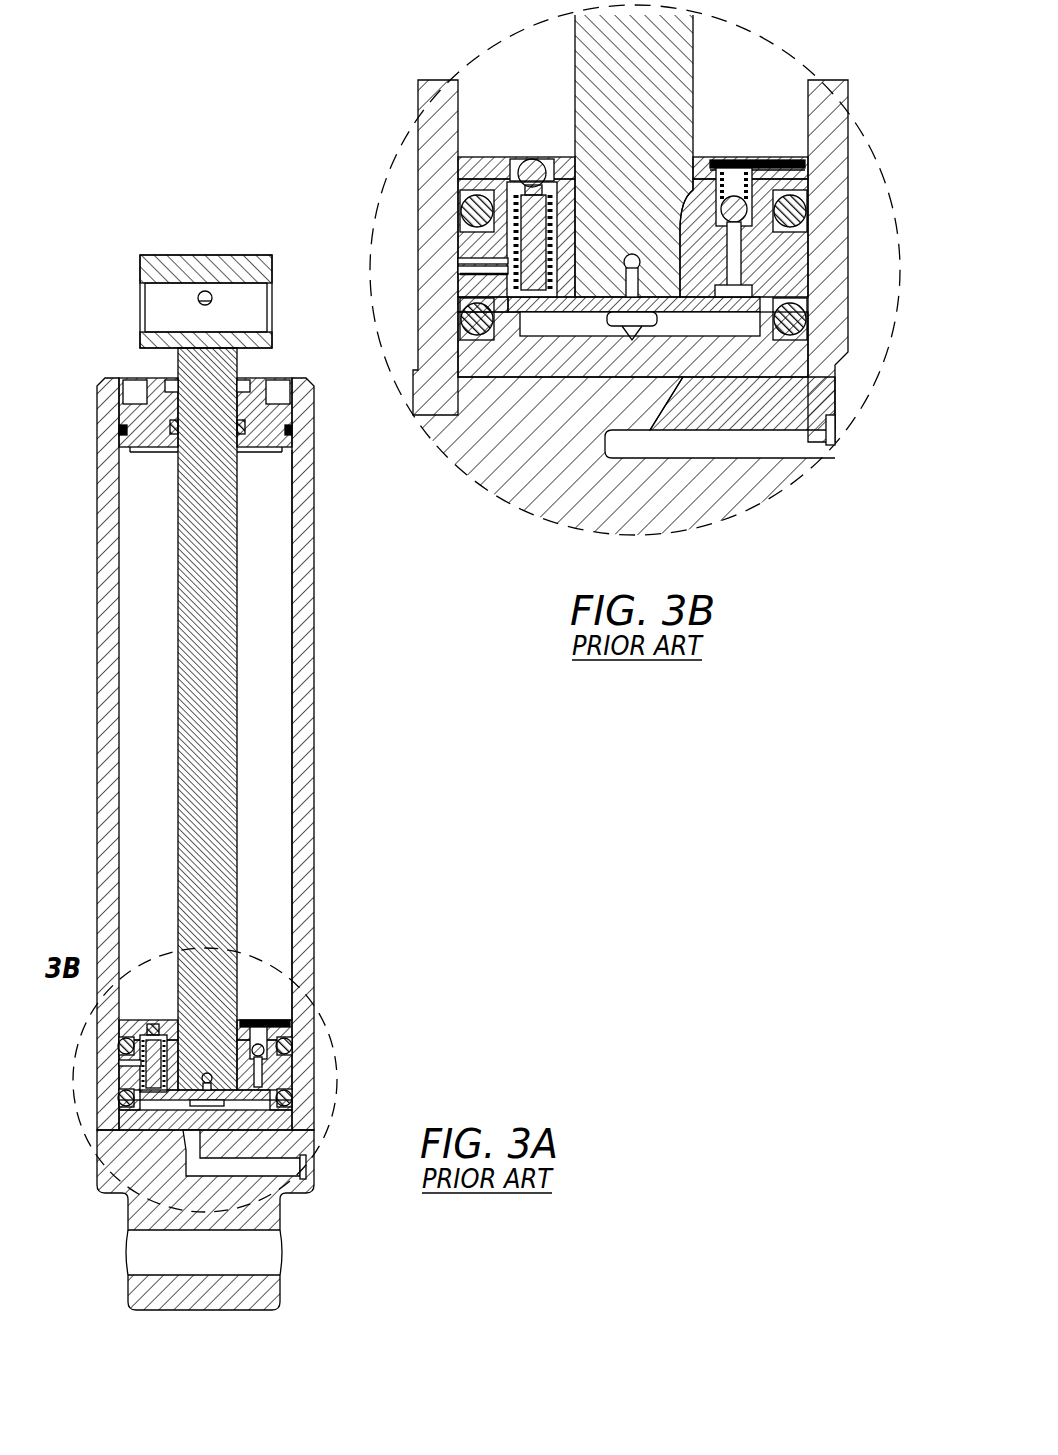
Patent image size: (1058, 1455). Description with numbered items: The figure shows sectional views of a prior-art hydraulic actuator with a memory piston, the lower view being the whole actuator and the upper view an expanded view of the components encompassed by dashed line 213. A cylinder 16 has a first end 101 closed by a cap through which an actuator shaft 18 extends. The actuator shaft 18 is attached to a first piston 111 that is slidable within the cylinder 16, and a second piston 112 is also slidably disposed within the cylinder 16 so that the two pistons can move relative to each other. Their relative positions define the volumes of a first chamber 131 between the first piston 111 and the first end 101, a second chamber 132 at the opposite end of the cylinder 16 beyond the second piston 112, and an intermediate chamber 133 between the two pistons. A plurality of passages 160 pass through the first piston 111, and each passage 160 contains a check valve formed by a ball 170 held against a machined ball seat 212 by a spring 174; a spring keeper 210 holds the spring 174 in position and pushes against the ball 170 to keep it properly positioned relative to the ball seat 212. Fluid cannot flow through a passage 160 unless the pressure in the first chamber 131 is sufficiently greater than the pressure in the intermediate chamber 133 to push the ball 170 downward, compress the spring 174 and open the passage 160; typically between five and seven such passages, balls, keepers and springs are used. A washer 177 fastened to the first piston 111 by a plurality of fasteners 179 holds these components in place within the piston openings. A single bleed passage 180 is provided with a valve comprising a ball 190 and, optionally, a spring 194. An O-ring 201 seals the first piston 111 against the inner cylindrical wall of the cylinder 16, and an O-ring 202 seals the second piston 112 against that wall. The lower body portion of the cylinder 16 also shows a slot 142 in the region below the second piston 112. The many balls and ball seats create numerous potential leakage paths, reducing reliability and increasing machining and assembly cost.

In FIG. 3A, the cylinder 16 is at (313, 745).
In FIG. 3B, the cylinder 16 is at (438, 105).
In FIG. 3A, the actuator shaft 18 is at (232, 596).
In FIG. 3B, the actuator shaft 18 is at (680, 65).
In FIG. 3A, the first end 101 is at (262, 380).
In FIG. 3A, the first piston 111 is at (295, 1085).
In FIG. 3B, the first piston 111 is at (465, 165).
In FIG. 3A, the second piston 112 is at (295, 1120).
In FIG. 3B, the second piston 112 is at (500, 370).
In FIG. 3A, the first chamber 131 is at (275, 672).
In FIG. 3A, the second chamber 132 is at (130, 1150).
In FIG. 3B, the second chamber 132 is at (535, 378).
In FIG. 3A, the intermediate chamber 133 is at (118, 1103).
In FIG. 3B, the intermediate chamber 133 is at (790, 330).
In FIG. 3A, the fluid passage slot 142 is at (280, 1165).
In FIG. 3B, the fluid passage slot 142 is at (785, 443).
In FIG. 3A, the passage 160 is at (120, 1075).
In FIG. 3B, the passage 160 is at (470, 250).
In FIG. 3A, the ball 170 is at (160, 1030).
In FIG. 3B, the ball 170 is at (515, 185).
In FIG. 3A, the spring 174 is at (120, 1063).
In FIG. 3B, the spring 174 is at (500, 261).
In FIG. 3A, the washer 177 is at (205, 1089).
In FIG. 3B, the washer 177 is at (560, 312).
In FIG. 3B, the fastener 179 is at (626, 345).
In FIG. 3A, the bleed passage 180 is at (295, 1065).
In FIG. 3B, the bleed passage 180 is at (760, 255).
In FIG. 3A, the ball 190 is at (300, 1040).
In FIG. 3B, the ball 190 is at (731, 165).
In FIG. 3A, the spring 194 is at (300, 1022).
In FIG. 3B, the spring 194 is at (745, 165).
In FIG. 3A, the O-ring 201 is at (300, 1050).
In FIG. 3B, the O-ring 201 is at (470, 200).
In FIG. 3A, the O-ring 202 is at (295, 1105).
In FIG. 3B, the O-ring 202 is at (465, 320).
In FIG. 3B, the spring keeper 210 is at (500, 271).
In FIG. 3B, the ball seat 212 is at (536, 160).
In FIG. 3A, the dashed line 213 is at (268, 946).